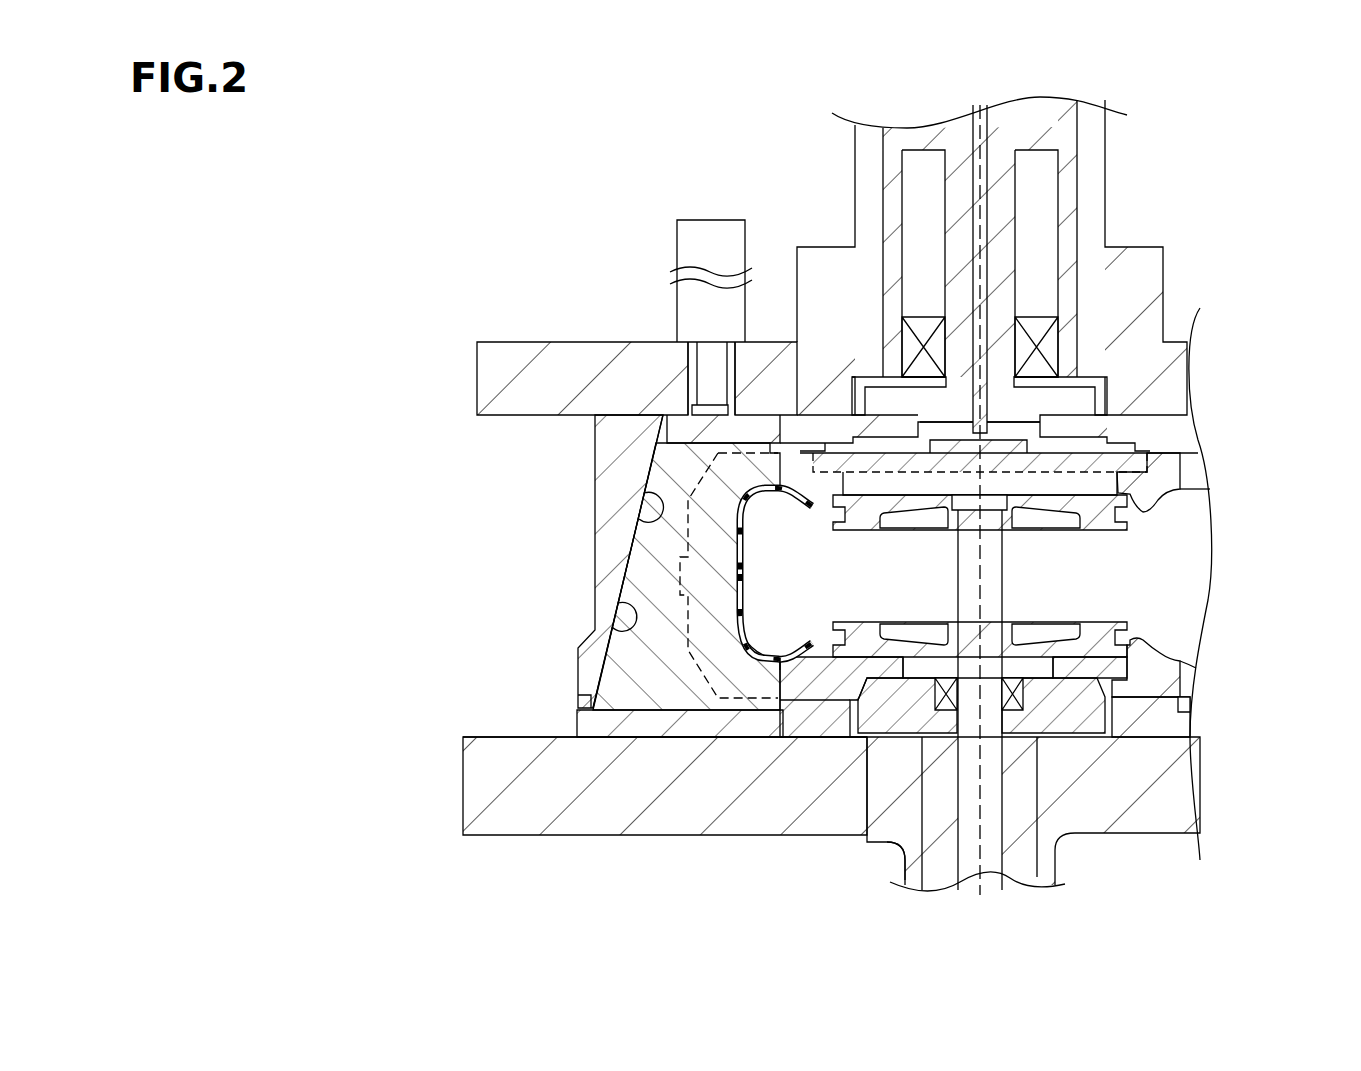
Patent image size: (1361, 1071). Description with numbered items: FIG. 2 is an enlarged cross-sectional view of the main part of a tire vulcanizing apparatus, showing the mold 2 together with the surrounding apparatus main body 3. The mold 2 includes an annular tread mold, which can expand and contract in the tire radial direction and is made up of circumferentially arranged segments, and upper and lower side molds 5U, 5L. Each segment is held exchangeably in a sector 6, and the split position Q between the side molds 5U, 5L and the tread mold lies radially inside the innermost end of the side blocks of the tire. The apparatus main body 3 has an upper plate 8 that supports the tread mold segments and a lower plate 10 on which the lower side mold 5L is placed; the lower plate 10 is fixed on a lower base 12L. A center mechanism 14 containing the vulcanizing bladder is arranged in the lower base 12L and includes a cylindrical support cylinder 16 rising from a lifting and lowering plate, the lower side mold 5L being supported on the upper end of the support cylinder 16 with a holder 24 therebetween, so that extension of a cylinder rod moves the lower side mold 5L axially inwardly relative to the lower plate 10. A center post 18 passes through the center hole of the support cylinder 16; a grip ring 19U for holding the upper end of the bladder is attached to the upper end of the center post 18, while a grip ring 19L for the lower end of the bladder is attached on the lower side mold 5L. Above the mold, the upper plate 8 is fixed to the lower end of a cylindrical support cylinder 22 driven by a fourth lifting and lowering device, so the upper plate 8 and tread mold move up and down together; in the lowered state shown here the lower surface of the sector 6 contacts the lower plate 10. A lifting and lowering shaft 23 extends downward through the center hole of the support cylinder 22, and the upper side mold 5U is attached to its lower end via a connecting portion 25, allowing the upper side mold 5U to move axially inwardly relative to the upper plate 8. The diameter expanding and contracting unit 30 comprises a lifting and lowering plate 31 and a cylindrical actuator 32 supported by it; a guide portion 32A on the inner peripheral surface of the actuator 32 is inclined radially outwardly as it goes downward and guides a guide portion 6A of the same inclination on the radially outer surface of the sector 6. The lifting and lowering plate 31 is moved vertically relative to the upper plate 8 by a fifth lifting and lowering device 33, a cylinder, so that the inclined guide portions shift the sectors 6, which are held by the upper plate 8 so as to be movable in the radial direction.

The mold 2 is at (813, 686).
The apparatus main body 3 is at (1218, 257).
The upper side mold 5U is at (800, 478).
The lower side mold 5L is at (802, 673).
The sector 6 is at (640, 655).
The guide portion 6A is at (625, 615).
The upper plate 8 is at (783, 430).
The lower plate 10 is at (738, 722).
The lower base 12L is at (463, 789).
The center mechanism 14 is at (878, 868).
The support cylinder 16 is at (1020, 840).
The center post 18 is at (988, 857).
The grip ring 19U is at (1106, 535).
The grip ring 19L is at (1106, 617).
The support cylinder 22 is at (1013, 188).
The lifting and lowering shaft 23 is at (1110, 392).
The holder 24 is at (1067, 710).
The connecting portion 25 is at (1073, 463).
The diameter expanding and contracting unit 30 is at (662, 258).
The lifting and lowering plate 31 is at (477, 377).
The actuator 32 is at (595, 454).
The guide portion 32A is at (652, 505).
The fifth lifting and lowering device 33 is at (708, 220).
The split position Q is at (776, 680).